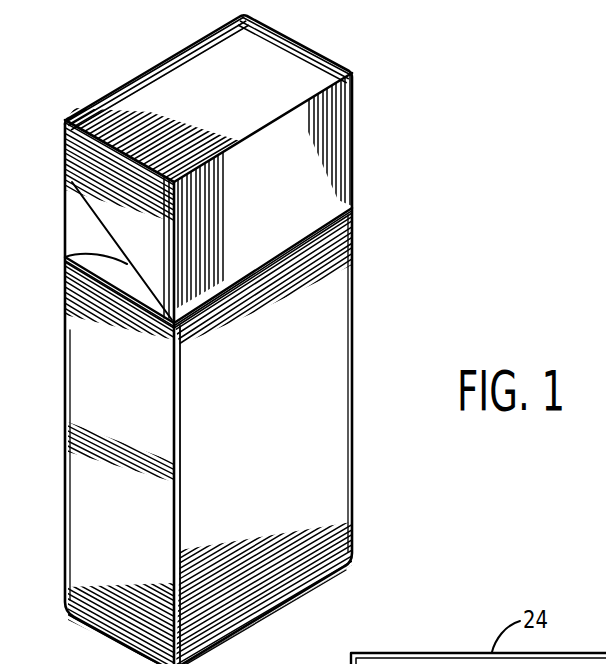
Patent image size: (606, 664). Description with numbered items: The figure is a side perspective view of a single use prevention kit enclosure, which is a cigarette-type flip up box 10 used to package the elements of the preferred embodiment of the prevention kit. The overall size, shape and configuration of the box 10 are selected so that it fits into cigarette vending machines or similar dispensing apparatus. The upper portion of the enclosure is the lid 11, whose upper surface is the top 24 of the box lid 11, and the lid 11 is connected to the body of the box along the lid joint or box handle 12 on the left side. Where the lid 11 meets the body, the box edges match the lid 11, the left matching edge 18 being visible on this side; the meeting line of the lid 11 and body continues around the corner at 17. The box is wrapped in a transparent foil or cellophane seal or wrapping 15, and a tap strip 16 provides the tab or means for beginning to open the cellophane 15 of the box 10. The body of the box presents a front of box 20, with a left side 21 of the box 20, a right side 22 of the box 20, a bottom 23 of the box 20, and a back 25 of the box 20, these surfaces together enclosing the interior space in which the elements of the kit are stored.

The flip up box 10 is at (412, 295).
The lid 11 is at (303, 190).
The lid joint or box handle 12 is at (65, 172).
The transparent foil or cellophane seal or wrapping 15 is at (84, 110).
The tap strip 16 is at (342, 228).
The rim corner 17 is at (234, 285).
The left matching edge 18 is at (65, 257).
The front of box 20 is at (337, 429).
The left side 21 is at (103, 487).
The right side 22 is at (352, 494).
The bottom 23 is at (275, 614).
The top 24 is at (190, 107).
The back 25 is at (65, 533).